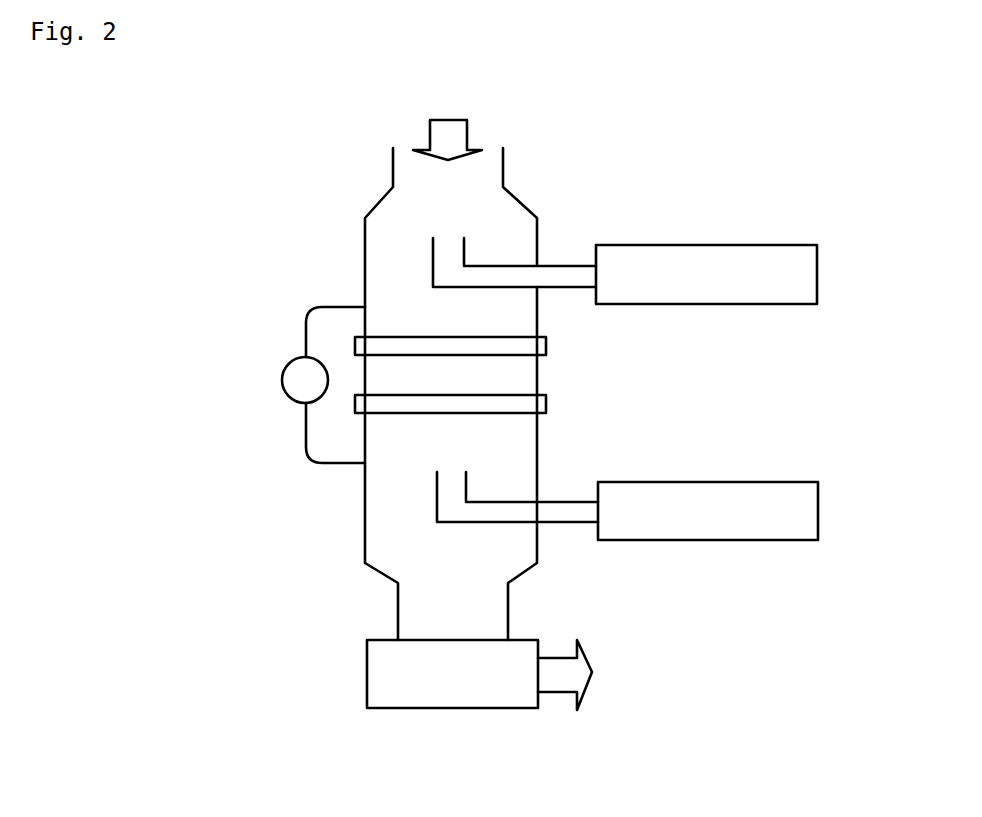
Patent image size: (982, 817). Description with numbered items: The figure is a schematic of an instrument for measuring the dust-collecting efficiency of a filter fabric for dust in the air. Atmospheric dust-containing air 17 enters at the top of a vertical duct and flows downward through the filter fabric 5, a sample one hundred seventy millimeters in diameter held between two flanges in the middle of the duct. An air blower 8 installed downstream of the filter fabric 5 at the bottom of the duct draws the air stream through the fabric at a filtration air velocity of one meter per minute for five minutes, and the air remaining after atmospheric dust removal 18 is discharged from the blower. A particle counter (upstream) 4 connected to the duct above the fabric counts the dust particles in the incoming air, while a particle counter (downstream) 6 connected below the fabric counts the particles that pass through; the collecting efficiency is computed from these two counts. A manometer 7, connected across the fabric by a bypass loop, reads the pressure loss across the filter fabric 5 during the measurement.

The atmospheric dust-containing air 17 is at (452, 132).
The particle counter (upstream) 4 is at (810, 277).
The filter fabric 5 is at (528, 383).
The particle counter (downstream) 6 is at (800, 518).
The manometer 7 is at (297, 378).
The air blower 8 is at (408, 678).
The air remaining after atmospheric dust removal 18 is at (557, 678).